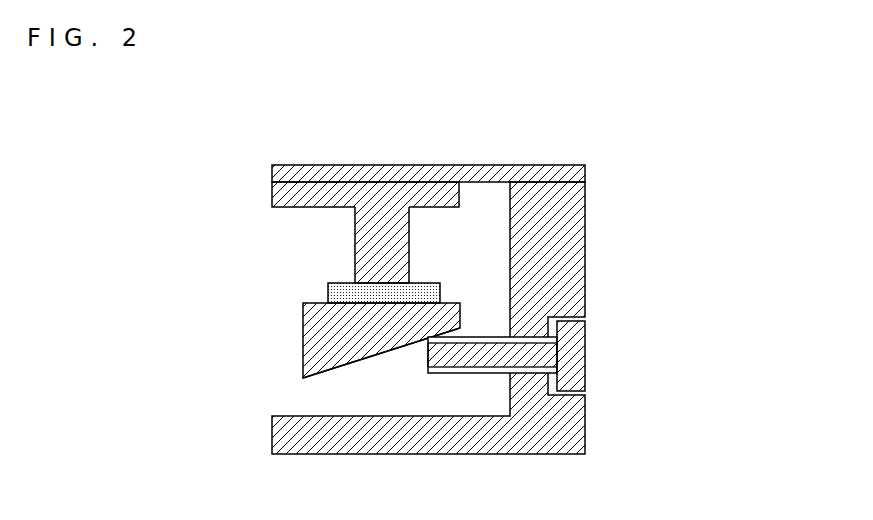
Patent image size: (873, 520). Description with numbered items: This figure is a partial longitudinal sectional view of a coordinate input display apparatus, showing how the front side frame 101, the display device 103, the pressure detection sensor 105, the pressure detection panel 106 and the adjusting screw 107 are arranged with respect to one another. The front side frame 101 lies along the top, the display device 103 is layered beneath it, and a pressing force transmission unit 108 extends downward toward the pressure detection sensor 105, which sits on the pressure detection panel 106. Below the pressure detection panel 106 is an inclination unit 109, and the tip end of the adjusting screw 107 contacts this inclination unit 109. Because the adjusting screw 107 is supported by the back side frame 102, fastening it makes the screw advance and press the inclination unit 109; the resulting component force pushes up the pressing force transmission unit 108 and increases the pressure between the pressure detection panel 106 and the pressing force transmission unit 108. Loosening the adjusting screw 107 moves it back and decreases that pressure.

The front side frame 101 is at (490, 165).
The back side frame 102 is at (465, 455).
The display device 103 is at (272, 192).
The pressure detection sensor 105 is at (330, 283).
The pressure detection panel 106 is at (303, 345).
The adjusting screw 107 is at (585, 348).
The pressing force transmission unit 108 is at (409, 250).
The inclination unit 109 is at (357, 363).